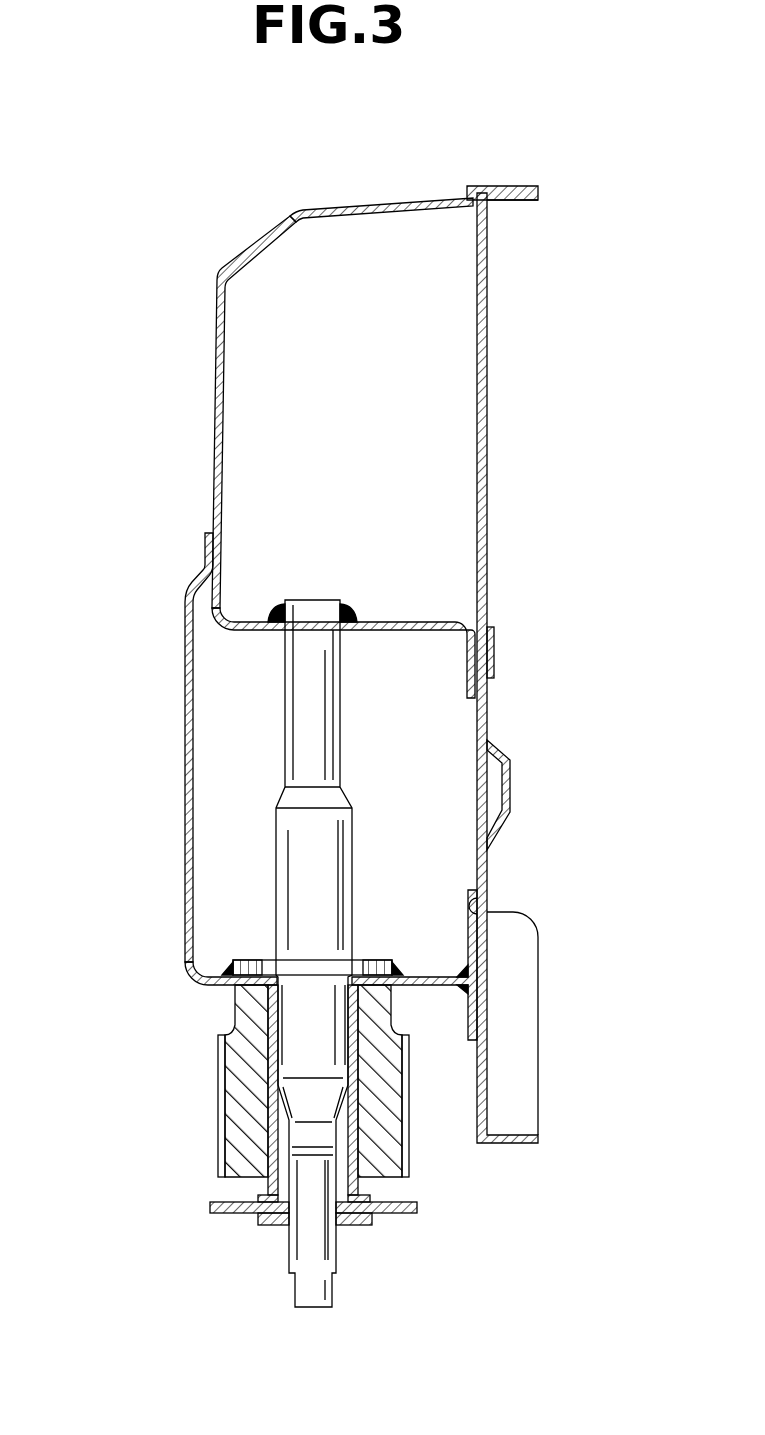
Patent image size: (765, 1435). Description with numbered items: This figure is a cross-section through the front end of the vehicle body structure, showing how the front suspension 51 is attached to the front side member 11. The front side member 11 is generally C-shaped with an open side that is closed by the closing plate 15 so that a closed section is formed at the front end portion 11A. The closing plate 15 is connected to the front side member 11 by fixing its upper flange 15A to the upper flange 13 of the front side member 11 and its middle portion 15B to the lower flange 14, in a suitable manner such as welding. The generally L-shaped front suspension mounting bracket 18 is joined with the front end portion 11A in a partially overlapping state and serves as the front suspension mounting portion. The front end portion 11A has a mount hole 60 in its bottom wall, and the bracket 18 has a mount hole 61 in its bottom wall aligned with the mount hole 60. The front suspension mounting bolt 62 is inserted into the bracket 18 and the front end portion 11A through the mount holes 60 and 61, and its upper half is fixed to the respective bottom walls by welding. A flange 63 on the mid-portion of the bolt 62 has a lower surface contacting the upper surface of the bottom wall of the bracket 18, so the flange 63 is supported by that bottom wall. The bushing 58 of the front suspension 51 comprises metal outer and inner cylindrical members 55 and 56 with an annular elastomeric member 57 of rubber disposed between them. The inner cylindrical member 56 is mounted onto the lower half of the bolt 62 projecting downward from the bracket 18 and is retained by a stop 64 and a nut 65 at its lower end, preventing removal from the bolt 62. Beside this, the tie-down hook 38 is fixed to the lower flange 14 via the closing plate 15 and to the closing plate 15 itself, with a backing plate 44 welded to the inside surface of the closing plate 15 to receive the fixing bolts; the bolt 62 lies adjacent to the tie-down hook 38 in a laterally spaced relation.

The front side member 11 is at (292, 200).
The front end portion 11A is at (343, 208).
The upper flange 13 is at (513, 186).
The lower flange 14 is at (467, 660).
The closing plate 15 is at (487, 288).
The upper flange 15A is at (513, 203).
The middle portion 15B is at (494, 661).
The front suspension mounting bracket 18 is at (185, 690).
The tie-down hook 38 is at (494, 1065).
The backing plate 44 is at (494, 900).
The front suspension 51 is at (185, 1027).
The outer cylindrical member 55 is at (223, 1092).
The inner cylindrical member 56 is at (260, 1143).
The elastomeric member 57 is at (227, 1058).
The bushing 58 is at (115, 1028).
The mount hole 60 is at (329, 620).
The mount hole 61 is at (345, 960).
The front suspension mounting bolt 62 is at (283, 757).
The flange 63 is at (205, 968).
The stop 64 is at (210, 1208).
The nut 65 is at (256, 1223).